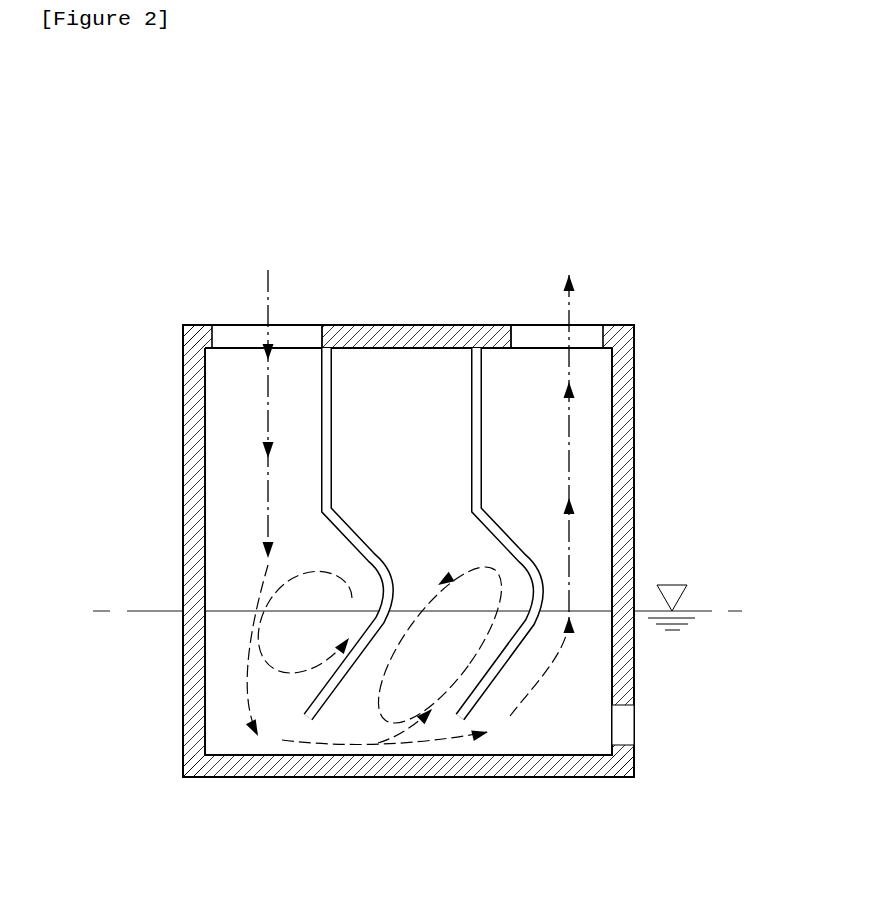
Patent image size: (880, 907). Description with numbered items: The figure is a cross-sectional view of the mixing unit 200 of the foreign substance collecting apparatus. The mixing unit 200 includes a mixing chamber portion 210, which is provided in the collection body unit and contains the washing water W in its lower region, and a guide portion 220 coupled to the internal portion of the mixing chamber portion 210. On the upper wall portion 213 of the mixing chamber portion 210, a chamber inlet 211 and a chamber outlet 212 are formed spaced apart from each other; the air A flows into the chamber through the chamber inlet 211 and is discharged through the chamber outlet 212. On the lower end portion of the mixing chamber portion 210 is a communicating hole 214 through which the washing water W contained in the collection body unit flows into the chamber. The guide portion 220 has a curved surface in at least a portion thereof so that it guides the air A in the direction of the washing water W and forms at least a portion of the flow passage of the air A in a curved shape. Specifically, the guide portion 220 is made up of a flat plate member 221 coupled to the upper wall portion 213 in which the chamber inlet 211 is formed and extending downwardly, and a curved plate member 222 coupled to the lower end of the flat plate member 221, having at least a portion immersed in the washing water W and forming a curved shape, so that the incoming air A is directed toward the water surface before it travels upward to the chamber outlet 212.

The mixing unit 200 is at (142, 424).
The mixing chamber portion 210 is at (695, 232).
The chamber inlet 211 is at (310, 341).
The chamber outlet 212 is at (540, 341).
The upper wall portion 213 is at (407, 326).
The communicating hole 214 is at (627, 716).
The guide portion 220 is at (544, 532).
The flat plate member 221 is at (481, 436).
The curved plate member 222 is at (520, 545).
The air A is at (268, 297).
The washing water W is at (565, 725).